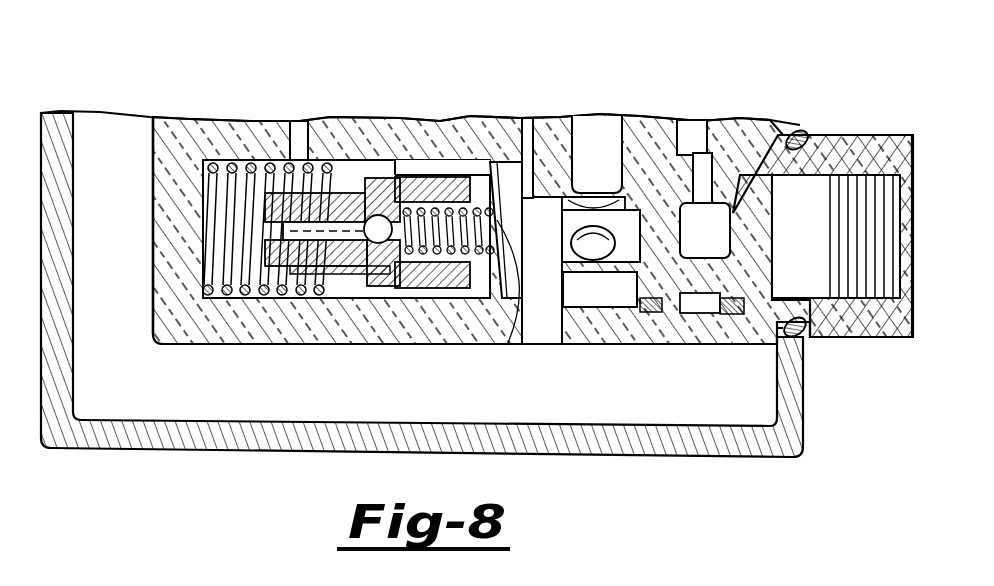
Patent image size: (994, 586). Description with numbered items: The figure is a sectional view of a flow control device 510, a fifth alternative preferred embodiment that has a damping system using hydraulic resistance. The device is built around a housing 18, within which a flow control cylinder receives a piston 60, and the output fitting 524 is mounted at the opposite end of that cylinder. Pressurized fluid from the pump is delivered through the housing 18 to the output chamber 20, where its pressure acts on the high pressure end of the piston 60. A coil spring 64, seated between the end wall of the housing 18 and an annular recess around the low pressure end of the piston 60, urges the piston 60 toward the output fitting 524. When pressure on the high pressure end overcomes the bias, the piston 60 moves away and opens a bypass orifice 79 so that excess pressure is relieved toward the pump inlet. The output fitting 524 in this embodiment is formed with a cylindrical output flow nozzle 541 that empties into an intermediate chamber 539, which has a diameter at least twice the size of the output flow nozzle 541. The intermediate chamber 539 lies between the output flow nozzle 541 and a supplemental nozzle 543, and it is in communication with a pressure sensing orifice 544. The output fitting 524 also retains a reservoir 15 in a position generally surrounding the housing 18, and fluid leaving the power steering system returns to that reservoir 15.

The flow control device 510 is at (281, 464).
The housing 18 is at (673, 358).
The reservoir 15 is at (118, 251).
The coil spring 64 is at (250, 165).
The piston 60 is at (500, 348).
The bypass orifice 79 is at (523, 163).
The output chamber 20 is at (570, 160).
The cylindrical output flow nozzle 541 is at (640, 255).
The intermediate chamber 539 is at (712, 155).
The pressure sensing orifice 544 is at (650, 190).
The output fitting 524 is at (868, 122).
The supplemental nozzle 543 is at (772, 237).